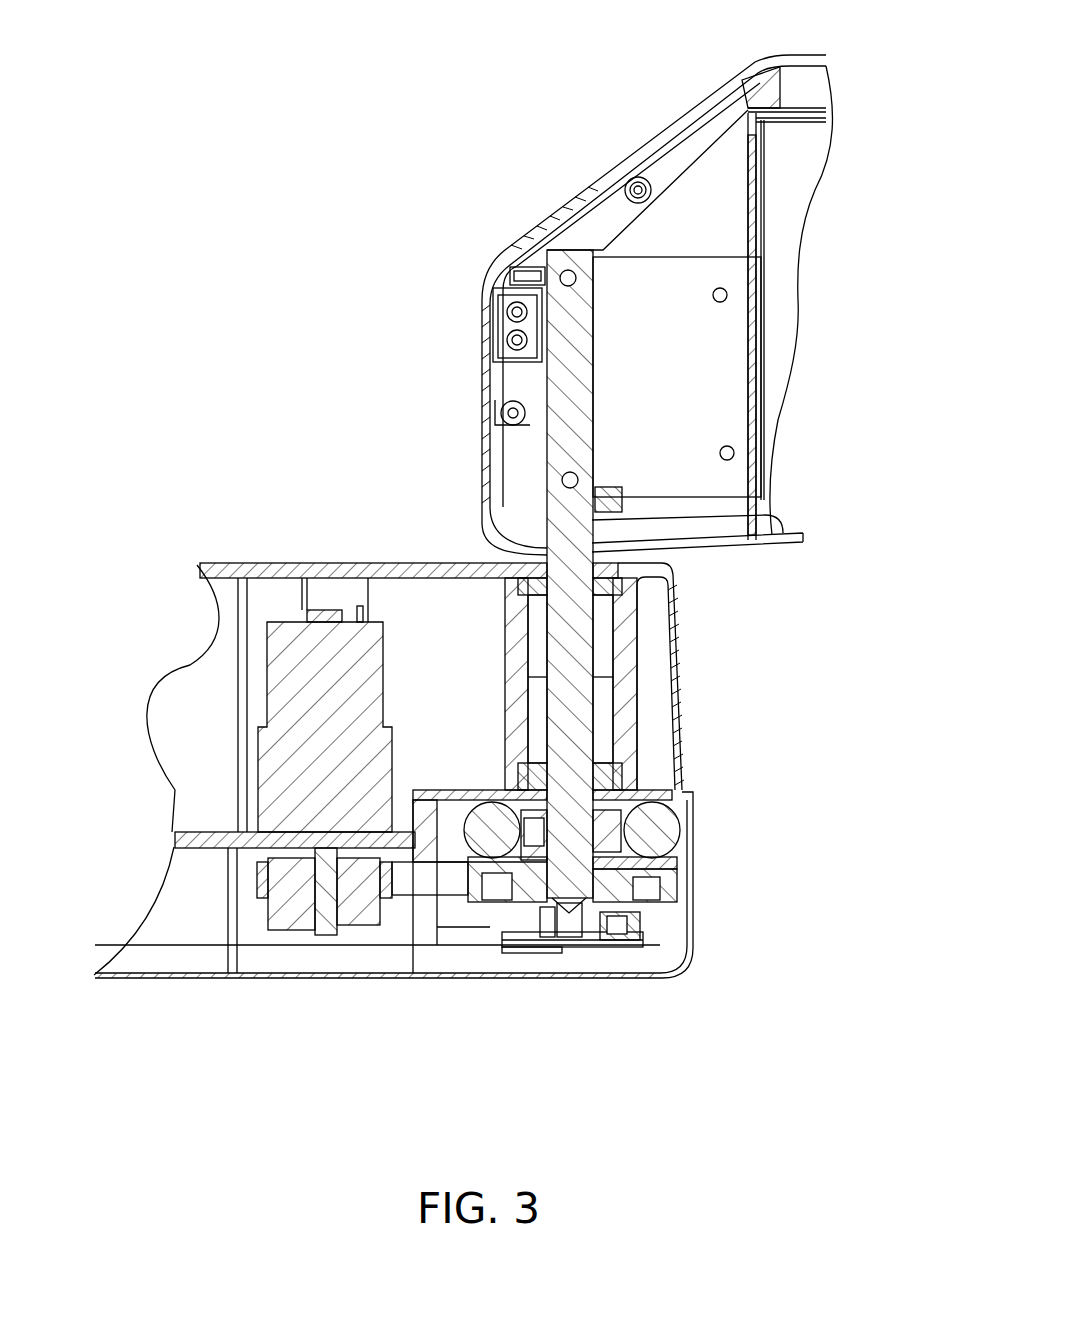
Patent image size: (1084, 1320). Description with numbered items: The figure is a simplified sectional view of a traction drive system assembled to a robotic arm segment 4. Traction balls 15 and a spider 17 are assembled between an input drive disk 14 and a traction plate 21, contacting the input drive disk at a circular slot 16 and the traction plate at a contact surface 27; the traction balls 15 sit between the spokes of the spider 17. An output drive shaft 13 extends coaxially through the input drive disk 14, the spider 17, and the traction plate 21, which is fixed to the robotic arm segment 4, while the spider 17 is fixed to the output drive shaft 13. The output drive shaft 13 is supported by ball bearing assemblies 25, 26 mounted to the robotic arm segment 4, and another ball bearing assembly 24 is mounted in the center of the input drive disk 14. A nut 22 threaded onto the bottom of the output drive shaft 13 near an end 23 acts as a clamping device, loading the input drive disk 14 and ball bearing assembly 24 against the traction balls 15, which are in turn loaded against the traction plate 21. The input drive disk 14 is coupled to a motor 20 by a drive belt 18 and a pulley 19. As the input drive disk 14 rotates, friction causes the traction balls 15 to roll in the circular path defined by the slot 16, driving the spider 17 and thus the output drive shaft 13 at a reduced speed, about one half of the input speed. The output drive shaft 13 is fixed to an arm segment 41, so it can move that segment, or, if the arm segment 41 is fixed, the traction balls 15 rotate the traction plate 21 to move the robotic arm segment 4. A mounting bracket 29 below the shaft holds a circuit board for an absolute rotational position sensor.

The robotic arm segment 4 is at (290, 567).
The output drive shaft 13 is at (565, 445).
The input drive disk 14 is at (663, 880).
The traction balls 15 is at (665, 821).
The circular slot 16 is at (660, 858).
The spider 17 is at (610, 826).
The drive belt 18 is at (410, 878).
The pulley 19 is at (282, 916).
The motor 20 is at (287, 668).
The traction plate 21 is at (648, 782).
The nut 22 is at (545, 908).
The end 23 is at (590, 914).
The ball bearing assembly 24 is at (525, 895).
The ball bearing assembly 25 is at (612, 766).
The ball bearing assembly 26 is at (525, 578).
The traction plate contact surface 27 is at (660, 798).
The mounting bracket 29 is at (430, 925).
The arm segment 41 is at (598, 202).